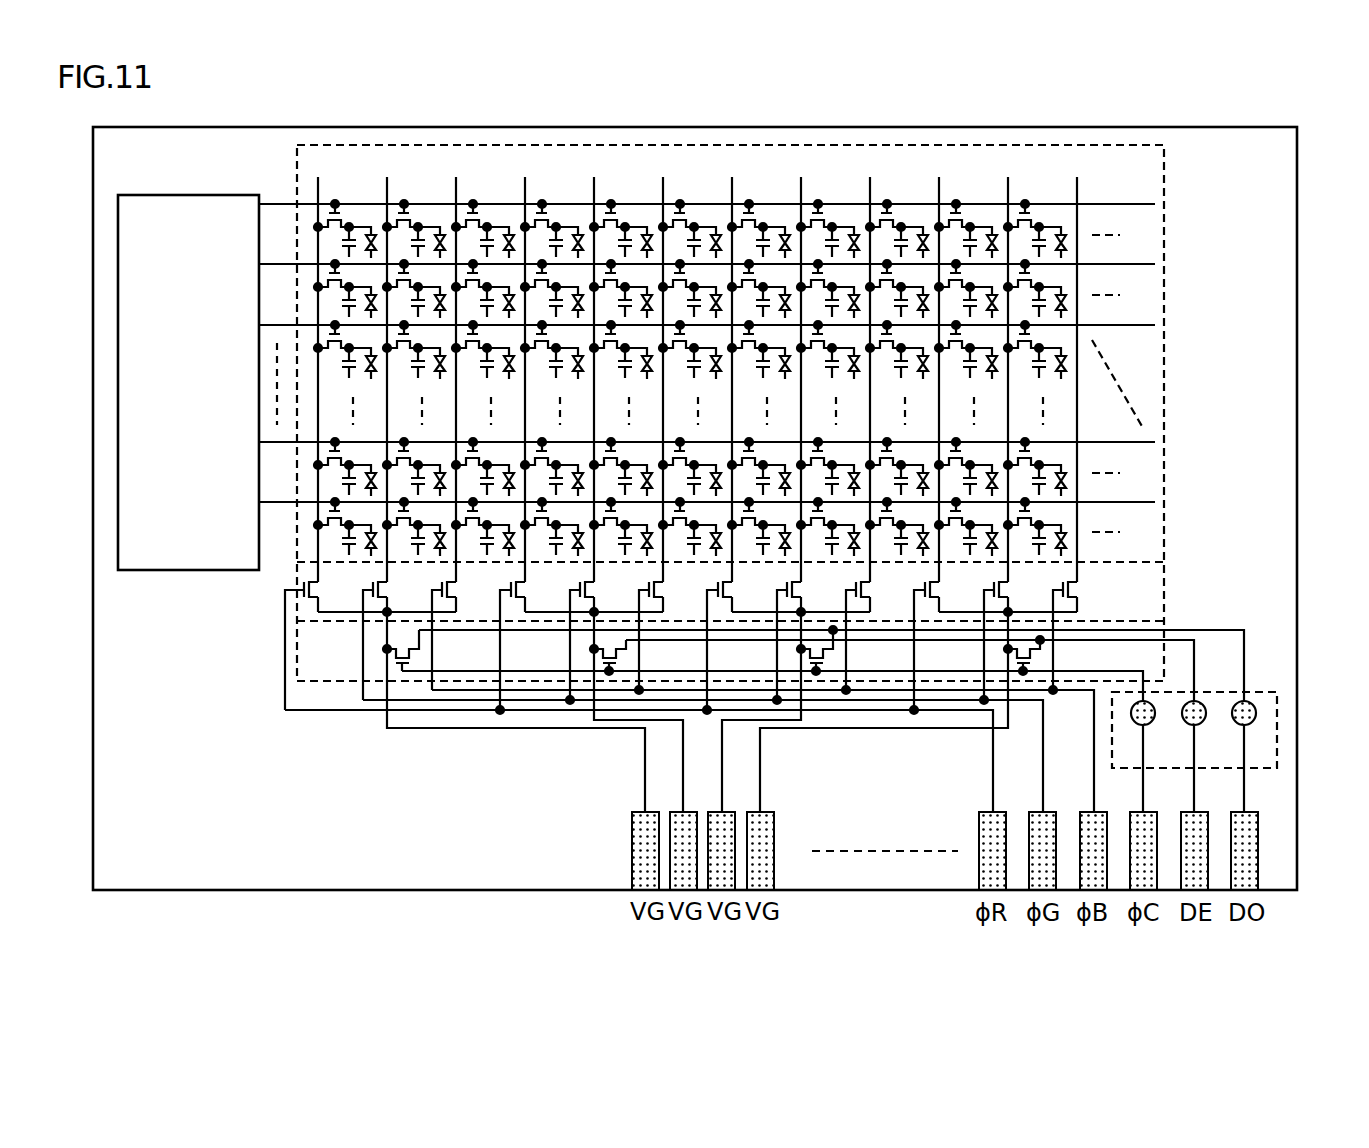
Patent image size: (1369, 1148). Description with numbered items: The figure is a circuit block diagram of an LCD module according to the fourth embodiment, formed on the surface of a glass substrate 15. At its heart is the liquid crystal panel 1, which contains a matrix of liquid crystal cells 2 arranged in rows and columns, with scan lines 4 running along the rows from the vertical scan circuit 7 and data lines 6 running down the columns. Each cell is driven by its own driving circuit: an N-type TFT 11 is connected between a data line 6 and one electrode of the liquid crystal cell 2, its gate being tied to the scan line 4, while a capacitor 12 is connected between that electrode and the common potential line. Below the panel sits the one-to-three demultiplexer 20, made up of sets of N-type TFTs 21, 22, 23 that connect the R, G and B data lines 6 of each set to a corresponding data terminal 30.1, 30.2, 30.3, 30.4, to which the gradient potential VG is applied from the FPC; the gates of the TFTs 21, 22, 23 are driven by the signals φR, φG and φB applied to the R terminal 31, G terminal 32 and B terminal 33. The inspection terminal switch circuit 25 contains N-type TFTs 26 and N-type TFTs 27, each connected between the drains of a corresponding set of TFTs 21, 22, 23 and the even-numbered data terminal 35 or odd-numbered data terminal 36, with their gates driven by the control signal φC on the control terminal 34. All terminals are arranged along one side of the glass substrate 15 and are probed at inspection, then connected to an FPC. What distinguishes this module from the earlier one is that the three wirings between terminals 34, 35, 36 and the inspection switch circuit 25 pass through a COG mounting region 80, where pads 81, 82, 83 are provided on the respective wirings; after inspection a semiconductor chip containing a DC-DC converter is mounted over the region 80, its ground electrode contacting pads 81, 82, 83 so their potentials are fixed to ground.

The liquid crystal panel 1 is at (1166, 180).
The liquid crystal cell 2 is at (1078, 523).
The scan line 4 is at (1142, 530).
The data line 6 is at (1104, 184).
The vertical scan circuit 7 is at (224, 195).
The N-type TFT 11 is at (951, 344).
The capacitor 12 is at (1034, 370).
The glass substrate 15 is at (1298, 198).
The 1:3 demultiplexer 20 is at (1123, 588).
The N-type TFT 21 is at (952, 587).
The N-type TFT 22 is at (1021, 587).
The N-type TFT 23 is at (1090, 587).
The inspection terminal switch circuit 25 is at (1123, 655).
The N-type TFT 26 is at (863, 655).
The N-type TFT 27 is at (1070, 655).
The data terminal 30.1 is at (636, 815).
The data terminal 30.2 is at (675, 815).
The data terminal 30.3 is at (713, 815).
The data terminal 30.4 is at (751, 815).
The R terminal 31 is at (980, 826).
The G terminal 32 is at (1030, 826).
The B terminal 33 is at (1080, 826).
The control terminal 34 is at (1132, 826).
The even-numbered data terminal 35 is at (1182, 826).
The odd-numbered data terminal 36 is at (1232, 826).
The COG mounting region 80 is at (1265, 690).
The pad 81 is at (1137, 726).
The pad 82 is at (1188, 726).
The pad 83 is at (1238, 726).